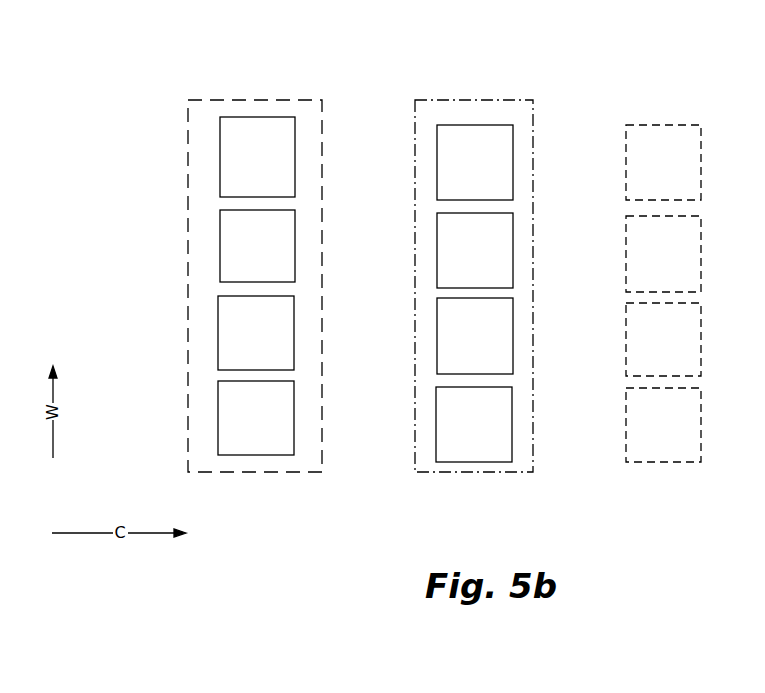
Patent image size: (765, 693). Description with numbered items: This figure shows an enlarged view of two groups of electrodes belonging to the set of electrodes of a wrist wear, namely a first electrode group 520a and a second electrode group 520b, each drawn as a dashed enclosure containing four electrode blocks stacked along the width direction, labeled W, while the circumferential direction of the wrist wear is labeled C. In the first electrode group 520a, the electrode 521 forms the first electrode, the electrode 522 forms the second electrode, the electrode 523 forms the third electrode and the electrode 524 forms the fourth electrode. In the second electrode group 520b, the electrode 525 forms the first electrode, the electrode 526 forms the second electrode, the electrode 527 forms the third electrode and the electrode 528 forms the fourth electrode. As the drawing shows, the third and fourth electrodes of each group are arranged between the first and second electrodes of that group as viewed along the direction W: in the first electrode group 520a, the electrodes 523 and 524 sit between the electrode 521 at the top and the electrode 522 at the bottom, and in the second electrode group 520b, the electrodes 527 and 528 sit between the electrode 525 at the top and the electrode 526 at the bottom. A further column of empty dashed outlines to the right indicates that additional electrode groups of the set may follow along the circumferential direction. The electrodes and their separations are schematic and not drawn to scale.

The first electrode group 520a is at (257, 100).
The second electrode group 520b is at (480, 98).
The electrode 521 is at (284, 170).
The electrode 522 is at (282, 430).
The electrode 523 is at (284, 258).
The electrode 524 is at (282, 345).
The electrode 525 is at (502, 175).
The electrode 526 is at (500, 435).
The electrode 527 is at (502, 263).
The electrode 528 is at (502, 349).